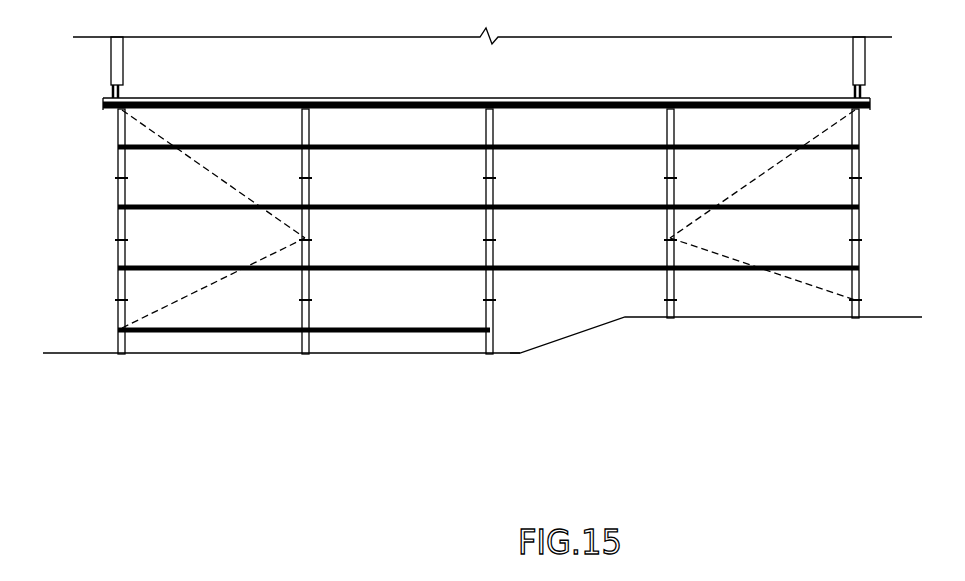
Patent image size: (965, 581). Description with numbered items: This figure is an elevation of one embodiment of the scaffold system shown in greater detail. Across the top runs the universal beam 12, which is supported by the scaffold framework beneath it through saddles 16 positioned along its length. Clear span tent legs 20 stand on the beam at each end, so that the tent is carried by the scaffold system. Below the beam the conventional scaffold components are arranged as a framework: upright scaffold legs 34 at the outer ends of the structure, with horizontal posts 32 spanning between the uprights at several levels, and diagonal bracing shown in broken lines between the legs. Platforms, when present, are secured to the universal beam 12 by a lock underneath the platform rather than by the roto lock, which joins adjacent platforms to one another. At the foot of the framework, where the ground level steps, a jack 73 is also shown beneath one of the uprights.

The universal beam 12 is at (222, 98).
The saddle 16 is at (300, 98).
The clear span tent legs 20 is at (112, 60).
The horizontal posts 32 is at (207, 332).
The scaffold legs 34 is at (117, 132).
The jack 73 is at (492, 342).